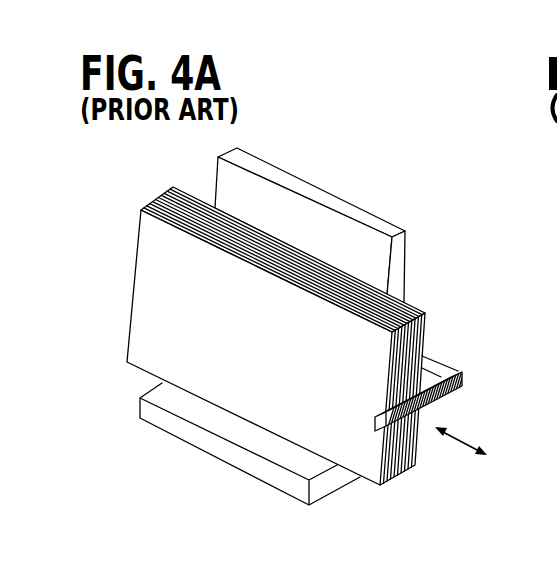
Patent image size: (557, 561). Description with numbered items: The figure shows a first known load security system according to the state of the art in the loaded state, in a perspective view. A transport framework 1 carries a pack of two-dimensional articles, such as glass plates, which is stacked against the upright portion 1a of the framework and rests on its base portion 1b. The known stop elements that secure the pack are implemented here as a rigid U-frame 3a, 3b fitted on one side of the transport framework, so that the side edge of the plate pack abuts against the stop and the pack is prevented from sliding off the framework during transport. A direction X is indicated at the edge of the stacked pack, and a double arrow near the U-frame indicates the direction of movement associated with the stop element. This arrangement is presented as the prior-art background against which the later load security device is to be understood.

The transport framework 1 is at (294, 326).
The transport framework back plate 1a is at (298, 208).
The transport framework base 1b is at (247, 443).
The rigid U-frame 3a is at (464, 401).
The rigid U-frame 3b is at (467, 383).
The direction X is at (427, 322).